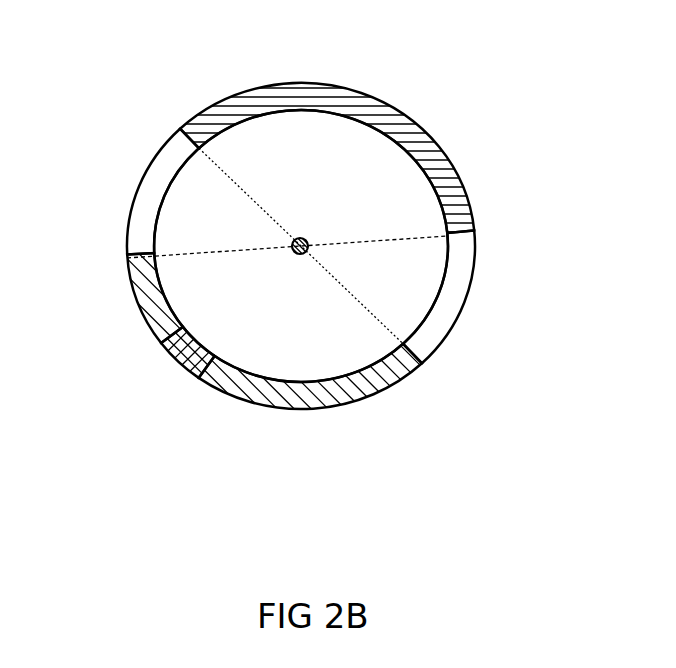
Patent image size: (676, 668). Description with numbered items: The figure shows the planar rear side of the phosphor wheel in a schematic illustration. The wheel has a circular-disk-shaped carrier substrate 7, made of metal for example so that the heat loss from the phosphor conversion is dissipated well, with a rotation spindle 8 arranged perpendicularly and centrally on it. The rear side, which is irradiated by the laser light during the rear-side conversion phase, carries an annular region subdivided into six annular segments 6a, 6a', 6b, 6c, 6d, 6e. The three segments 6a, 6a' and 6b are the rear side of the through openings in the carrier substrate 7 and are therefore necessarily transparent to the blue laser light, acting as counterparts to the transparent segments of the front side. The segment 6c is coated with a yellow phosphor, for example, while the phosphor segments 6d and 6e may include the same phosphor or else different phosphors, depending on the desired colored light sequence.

The carrier substrate 7 is at (270, 323).
The rotation spindle 8 is at (298, 238).
The annular segment 6a is at (113, 192).
The annular segment 6a' is at (505, 296).
The annular segment 6b is at (425, 132).
The annular segment 6c is at (177, 362).
The annular segment 6d is at (309, 409).
The annular segment 6e is at (157, 330).